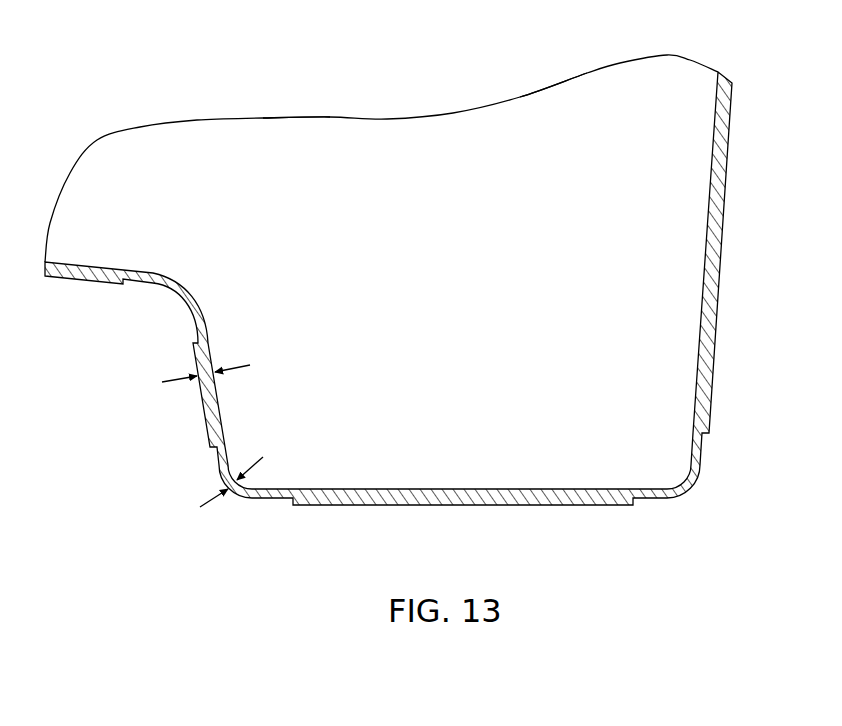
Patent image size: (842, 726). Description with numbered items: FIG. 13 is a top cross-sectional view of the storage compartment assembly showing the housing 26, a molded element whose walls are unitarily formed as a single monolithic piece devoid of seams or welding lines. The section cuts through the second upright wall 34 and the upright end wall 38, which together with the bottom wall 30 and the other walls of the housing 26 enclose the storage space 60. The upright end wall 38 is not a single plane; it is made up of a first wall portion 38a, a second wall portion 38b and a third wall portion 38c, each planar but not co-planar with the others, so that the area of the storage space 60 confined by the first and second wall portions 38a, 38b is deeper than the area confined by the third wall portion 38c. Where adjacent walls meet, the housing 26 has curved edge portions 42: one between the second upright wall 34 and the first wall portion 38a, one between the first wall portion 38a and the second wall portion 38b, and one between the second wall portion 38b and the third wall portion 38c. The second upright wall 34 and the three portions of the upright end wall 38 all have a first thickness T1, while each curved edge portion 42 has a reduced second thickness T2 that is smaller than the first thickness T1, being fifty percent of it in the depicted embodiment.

The housing 26 is at (169, 94).
The bottom wall 30 is at (556, 128).
The second upright wall 34 is at (719, 272).
The upright end wall 38 is at (370, 509).
The first wall portion 38a is at (552, 508).
The second wall portion 38b is at (203, 415).
The third wall portion 38c is at (71, 280).
The curved edge portions 42 is at (188, 292).
The storage space 60 is at (290, 165).
The first thickness T1 is at (212, 352).
The second thickness T2 is at (230, 474).